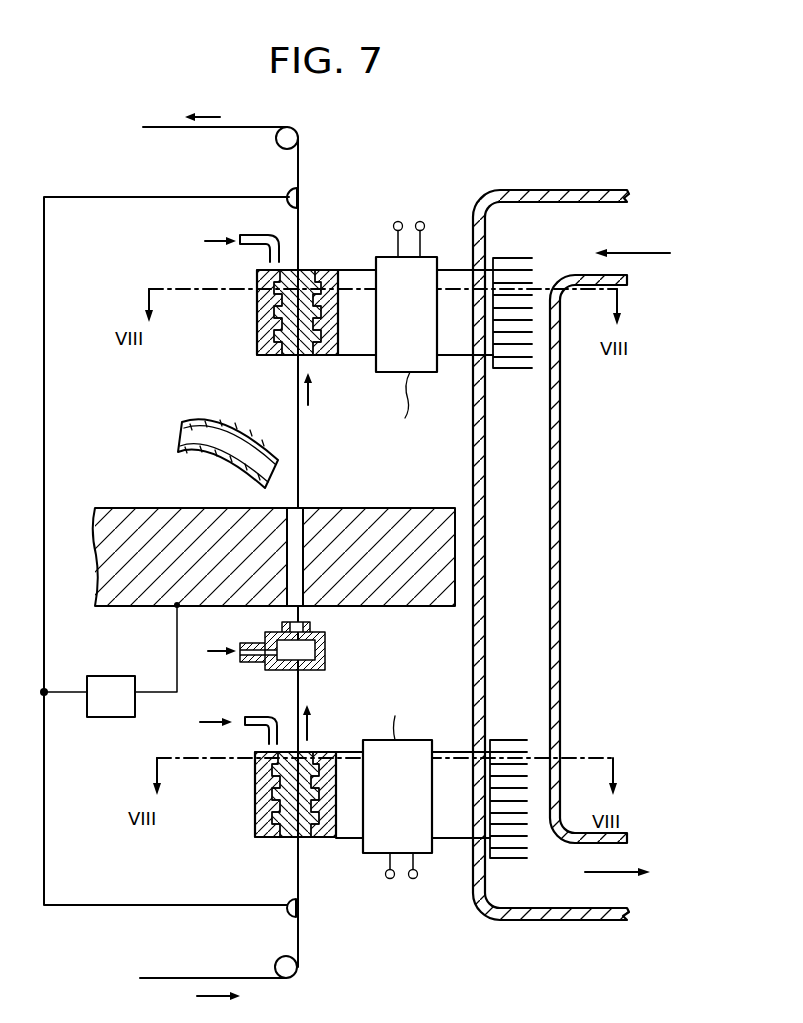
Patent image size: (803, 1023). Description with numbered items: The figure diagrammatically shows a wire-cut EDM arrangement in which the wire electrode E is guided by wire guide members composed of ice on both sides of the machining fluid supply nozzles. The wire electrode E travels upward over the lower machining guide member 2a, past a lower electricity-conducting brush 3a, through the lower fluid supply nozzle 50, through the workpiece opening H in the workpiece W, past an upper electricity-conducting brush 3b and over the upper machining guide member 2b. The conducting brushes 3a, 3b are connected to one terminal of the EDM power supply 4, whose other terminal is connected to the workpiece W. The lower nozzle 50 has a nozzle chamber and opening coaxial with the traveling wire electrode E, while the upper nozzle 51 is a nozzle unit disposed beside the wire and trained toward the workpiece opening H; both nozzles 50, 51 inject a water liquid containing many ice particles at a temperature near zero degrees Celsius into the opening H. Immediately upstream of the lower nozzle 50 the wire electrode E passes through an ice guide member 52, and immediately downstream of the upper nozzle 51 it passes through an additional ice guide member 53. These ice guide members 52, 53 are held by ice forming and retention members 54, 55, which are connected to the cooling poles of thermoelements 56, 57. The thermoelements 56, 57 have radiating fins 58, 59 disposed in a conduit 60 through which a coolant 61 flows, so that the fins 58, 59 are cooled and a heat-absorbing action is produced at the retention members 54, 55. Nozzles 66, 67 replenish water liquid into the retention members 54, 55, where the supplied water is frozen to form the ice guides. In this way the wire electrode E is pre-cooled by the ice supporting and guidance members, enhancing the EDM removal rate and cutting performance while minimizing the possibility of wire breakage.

The lower machining guide member 2a is at (275, 960).
The upper machining guide member 2b is at (278, 141).
The lower electricity-conducting brush 3a is at (286, 904).
The upper electricity-conducting brush 3b is at (287, 195).
The EDM power supply 4 is at (102, 717).
The lower fluid supply nozzle 50 is at (325, 649).
The upper nozzle 51 is at (239, 445).
The ice guide member 52 is at (308, 838).
The additional ice guide member 53 is at (310, 270).
The ice forming and retention member 54 is at (252, 790).
The ice forming and retention member 55 is at (257, 305).
The thermoelement 56 is at (365, 820).
The thermoelement 57 is at (376, 283).
The radiating fin 58 is at (514, 845).
The radiating fin 59 is at (512, 370).
The conduit 60 is at (560, 513).
The coolant 61 is at (612, 242).
The nozzle 66 is at (251, 718).
The nozzle 67 is at (240, 243).
The workpiece W is at (118, 508).
The workpiece opening H is at (300, 508).
The wire electrode E is at (298, 420).